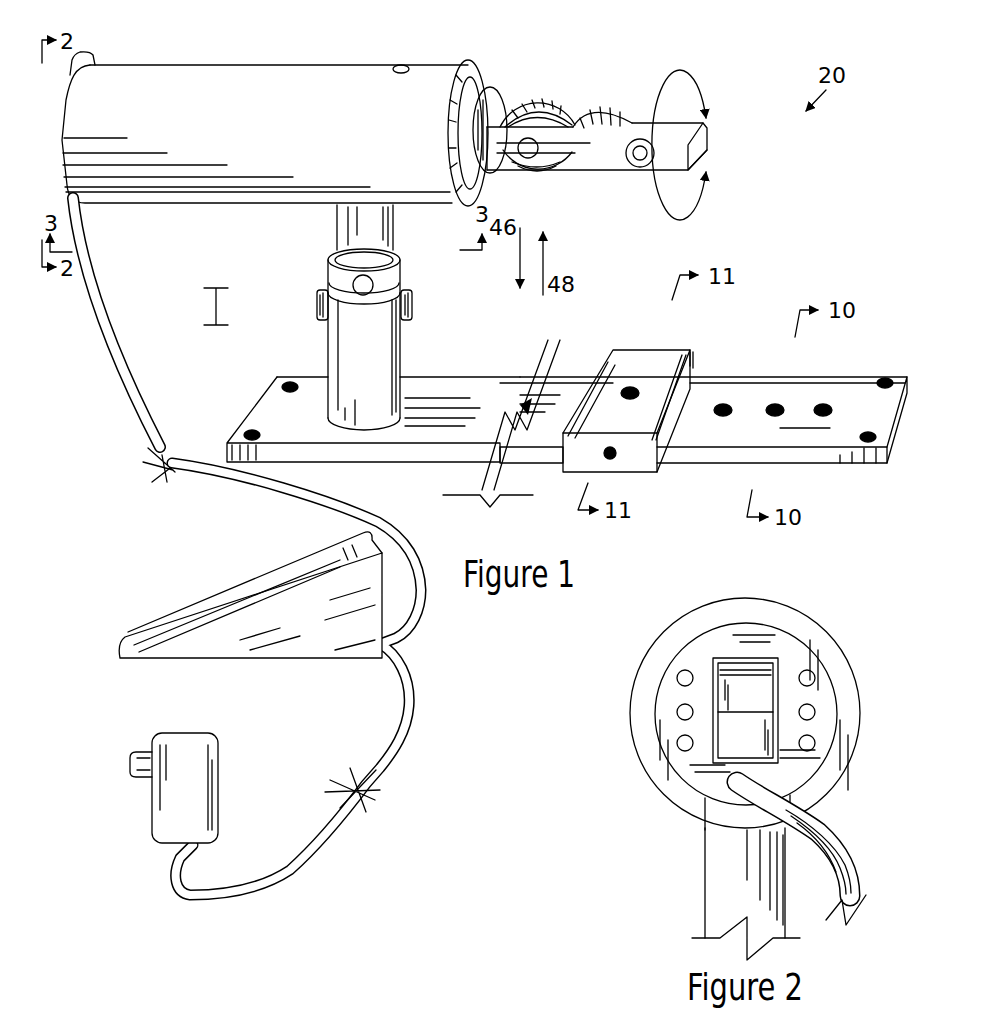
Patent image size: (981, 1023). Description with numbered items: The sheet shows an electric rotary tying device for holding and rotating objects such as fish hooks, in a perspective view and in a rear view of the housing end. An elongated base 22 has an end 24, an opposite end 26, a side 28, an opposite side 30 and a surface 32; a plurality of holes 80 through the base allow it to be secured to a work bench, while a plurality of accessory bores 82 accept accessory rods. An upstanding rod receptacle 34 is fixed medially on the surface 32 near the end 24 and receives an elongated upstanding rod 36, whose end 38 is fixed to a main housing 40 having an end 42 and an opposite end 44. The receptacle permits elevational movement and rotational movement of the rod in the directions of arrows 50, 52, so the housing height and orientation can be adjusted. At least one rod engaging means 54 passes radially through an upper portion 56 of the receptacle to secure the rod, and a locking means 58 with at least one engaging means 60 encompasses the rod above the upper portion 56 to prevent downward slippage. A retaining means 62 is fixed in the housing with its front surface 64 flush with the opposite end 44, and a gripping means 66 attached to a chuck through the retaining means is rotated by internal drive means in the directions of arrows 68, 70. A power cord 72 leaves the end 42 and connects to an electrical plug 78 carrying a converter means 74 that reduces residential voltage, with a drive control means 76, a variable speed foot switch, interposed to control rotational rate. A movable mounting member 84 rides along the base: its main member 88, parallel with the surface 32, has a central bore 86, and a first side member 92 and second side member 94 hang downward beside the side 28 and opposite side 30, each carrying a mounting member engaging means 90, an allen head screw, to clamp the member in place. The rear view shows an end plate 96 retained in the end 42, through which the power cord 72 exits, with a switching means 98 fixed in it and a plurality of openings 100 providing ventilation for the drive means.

In FIG. 1, the elongated base 22 is at (519, 353).
In FIG. 1, the end 24 is at (255, 413).
In FIG. 1, the opposite end 26 is at (892, 453).
In FIG. 1, the side 28 is at (445, 466).
In FIG. 1, the opposite side 30 is at (552, 359).
In FIG. 1, the surface 32 is at (601, 413).
In FIG. 1, the upstanding rod receptacle 34 is at (392, 381).
In FIG. 1, the elongated upstanding rod 36 is at (337, 240).
In FIG. 1, the end 38 is at (415, 238).
In FIG. 1, the main housing 40 is at (278, 86).
In FIG. 2, the main housing 40 is at (782, 606).
In FIG. 1, the end 42 is at (93, 58).
In FIG. 2, the end 42 is at (672, 641).
In FIG. 1, the opposite end 44 is at (478, 66).
In FIG. 1, the arrow 50 is at (306, 225).
In FIG. 1, the arrow 52 is at (382, 252).
In FIG. 1, the rod engaging means 54 is at (317, 309).
In FIG. 1, the upper portion 56 is at (215, 306).
In FIG. 1, the locking means 58 is at (330, 279).
In FIG. 1, the engaging means 60 is at (357, 300).
In FIG. 1, the retaining means 62 is at (495, 95).
In FIG. 1, the front surface 64 is at (494, 95).
In FIG. 1, the gripping means 66 is at (592, 111).
In FIG. 1, the arrow 68 is at (706, 98).
In FIG. 1, the arrow 70 is at (703, 193).
In FIG. 1, the power cord 72 is at (95, 249).
In FIG. 2, the power cord 72 is at (832, 816).
In FIG. 1, the converter means 74 is at (188, 756).
In FIG. 1, the drive control means 76 is at (285, 661).
In FIG. 1, the electrical plug 78 is at (135, 766).
In FIG. 1, the holes 80 is at (283, 383).
In FIG. 1, the accessory bores 82 is at (725, 402).
In FIG. 1, the movable mounting member 84 is at (642, 349).
In FIG. 1, the bore 86 is at (630, 389).
In FIG. 1, the main member 88 is at (672, 351).
In FIG. 1, the mounting member engaging means 90 is at (612, 461).
In FIG. 1, the first side member 92 is at (575, 463).
In FIG. 1, the second side member 94 is at (697, 363).
In FIG. 2, the end plate 96 is at (705, 783).
In FIG. 2, the switching means 98 is at (752, 666).
In FIG. 2, the openings 100 is at (676, 677).